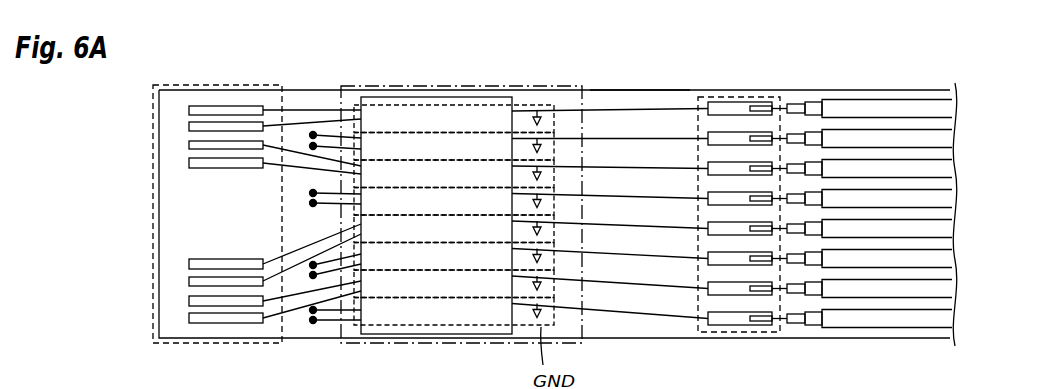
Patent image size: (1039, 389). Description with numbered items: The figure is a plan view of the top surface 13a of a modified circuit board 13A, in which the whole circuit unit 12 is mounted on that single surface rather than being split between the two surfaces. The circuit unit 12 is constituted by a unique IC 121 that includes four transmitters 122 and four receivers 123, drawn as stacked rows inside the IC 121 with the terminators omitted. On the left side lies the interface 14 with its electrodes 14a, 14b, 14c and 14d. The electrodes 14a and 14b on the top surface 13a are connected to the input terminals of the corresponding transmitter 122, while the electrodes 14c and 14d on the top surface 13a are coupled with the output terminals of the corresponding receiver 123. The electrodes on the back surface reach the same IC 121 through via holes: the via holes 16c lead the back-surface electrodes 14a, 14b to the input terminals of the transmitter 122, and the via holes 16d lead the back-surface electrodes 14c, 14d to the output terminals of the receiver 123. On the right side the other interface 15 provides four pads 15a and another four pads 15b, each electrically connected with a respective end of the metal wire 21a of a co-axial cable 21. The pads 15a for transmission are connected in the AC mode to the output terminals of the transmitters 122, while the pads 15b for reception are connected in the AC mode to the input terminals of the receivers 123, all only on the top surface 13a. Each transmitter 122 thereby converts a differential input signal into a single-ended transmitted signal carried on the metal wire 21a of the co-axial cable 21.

The circuit unit 12 is at (577, 86).
The IC 121 is at (365, 97).
The transmitter 122 is at (454, 215).
The receiver 123 is at (454, 215).
The circuit board 13A is at (663, 90).
The top surface 13a is at (617, 100).
The interface 14 is at (229, 85).
The electrode 14a is at (250, 107).
The electrode 14b is at (203, 125).
The electrode 14c is at (246, 264).
The electrode 14d is at (207, 282).
The interface 15 is at (698, 323).
The pad 15a is at (735, 168).
The pad 15b is at (708, 140).
The via hole 16c is at (312, 278).
The via hole 16d is at (312, 78).
The co-axial cable 21 is at (897, 106).
The metal wire 21a is at (766, 101).